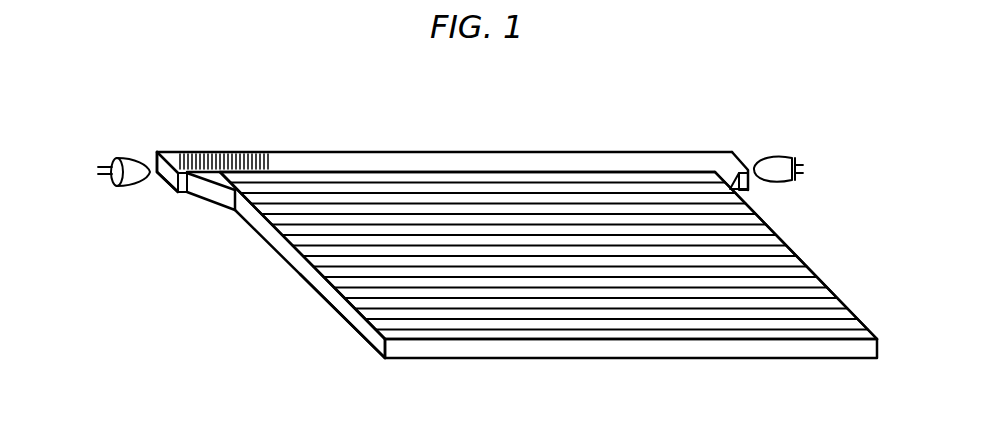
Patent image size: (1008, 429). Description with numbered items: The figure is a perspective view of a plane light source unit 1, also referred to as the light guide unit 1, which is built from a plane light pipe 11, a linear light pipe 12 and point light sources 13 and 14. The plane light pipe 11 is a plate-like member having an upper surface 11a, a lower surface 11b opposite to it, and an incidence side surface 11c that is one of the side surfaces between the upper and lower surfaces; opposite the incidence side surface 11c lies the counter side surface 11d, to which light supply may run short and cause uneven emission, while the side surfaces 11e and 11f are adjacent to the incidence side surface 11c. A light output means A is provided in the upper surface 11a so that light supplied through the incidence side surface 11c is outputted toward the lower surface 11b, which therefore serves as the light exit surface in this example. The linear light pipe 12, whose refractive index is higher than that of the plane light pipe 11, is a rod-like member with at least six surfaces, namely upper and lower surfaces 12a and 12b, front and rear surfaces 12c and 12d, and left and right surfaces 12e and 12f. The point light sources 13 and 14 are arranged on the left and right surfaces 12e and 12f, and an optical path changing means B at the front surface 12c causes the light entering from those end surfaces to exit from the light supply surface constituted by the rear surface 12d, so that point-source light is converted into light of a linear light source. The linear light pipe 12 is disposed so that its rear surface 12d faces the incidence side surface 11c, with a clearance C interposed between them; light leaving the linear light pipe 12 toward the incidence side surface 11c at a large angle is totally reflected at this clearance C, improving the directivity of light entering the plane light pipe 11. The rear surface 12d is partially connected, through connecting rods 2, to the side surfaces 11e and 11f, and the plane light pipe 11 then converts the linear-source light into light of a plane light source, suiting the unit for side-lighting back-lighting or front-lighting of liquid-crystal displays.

The plane light source unit 1 is at (243, 327).
The connecting rods 2 is at (210, 192).
The plane light pipe 11 is at (512, 208).
The upper surface 11a is at (727, 248).
The lower surface 11b is at (362, 337).
The incidence side surface 11c is at (632, 182).
The counter side surface 11d is at (580, 353).
The side surface 11e is at (280, 252).
The side surface 11f is at (813, 268).
The linear light pipe 12 is at (550, 162).
The upper surface 12a is at (430, 160).
The lower surface 12b is at (172, 192).
The front surface 12c is at (388, 152).
The rear surface 12d is at (335, 173).
The left surface 12e is at (157, 152).
The right surface 12f is at (727, 155).
The point light source 13 is at (107, 182).
The point light source 14 is at (803, 167).
The light output means A is at (775, 263).
The optical path changing means B is at (228, 150).
The clearance C is at (595, 177).